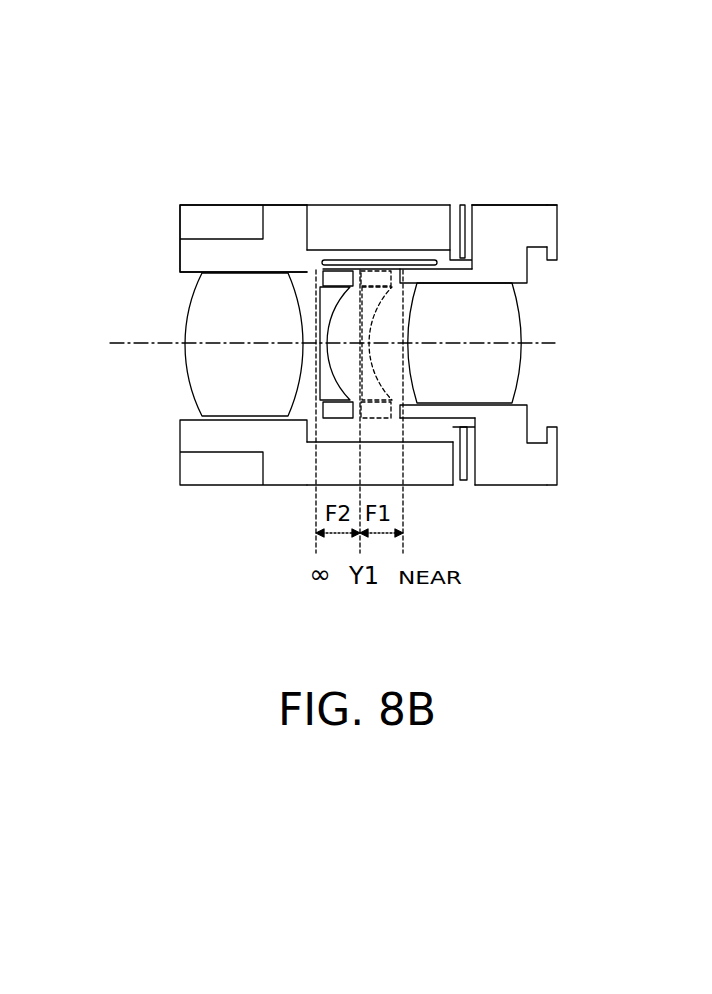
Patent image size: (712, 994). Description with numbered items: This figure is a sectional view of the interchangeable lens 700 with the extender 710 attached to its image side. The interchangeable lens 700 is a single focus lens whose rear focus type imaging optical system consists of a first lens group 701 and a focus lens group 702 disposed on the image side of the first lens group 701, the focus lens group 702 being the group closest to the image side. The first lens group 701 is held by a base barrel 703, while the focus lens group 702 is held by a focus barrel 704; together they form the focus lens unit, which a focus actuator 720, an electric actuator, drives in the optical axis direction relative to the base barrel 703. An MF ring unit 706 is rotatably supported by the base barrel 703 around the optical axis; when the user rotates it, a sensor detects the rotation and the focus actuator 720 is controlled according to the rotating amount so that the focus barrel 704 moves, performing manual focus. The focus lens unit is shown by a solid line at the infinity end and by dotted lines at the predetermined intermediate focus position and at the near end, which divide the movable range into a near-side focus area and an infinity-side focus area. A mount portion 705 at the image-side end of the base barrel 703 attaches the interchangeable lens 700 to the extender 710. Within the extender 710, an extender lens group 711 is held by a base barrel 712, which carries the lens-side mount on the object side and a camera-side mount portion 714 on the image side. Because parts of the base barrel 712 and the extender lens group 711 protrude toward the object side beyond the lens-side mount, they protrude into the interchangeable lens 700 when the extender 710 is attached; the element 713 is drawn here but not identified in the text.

The interchangeable lens 700 is at (463, 70).
The extender 710 is at (565, 68).
The first lens group 701 is at (200, 318).
The focus lens group 702 is at (342, 300).
The base barrel 703 is at (353, 227).
The focus barrel 704 is at (342, 410).
The mount portion 705 is at (455, 230).
The MF ring unit 706 is at (227, 217).
The extender lens group 711 is at (477, 325).
The base barrel 712 is at (518, 230).
The engaging pin 713 is at (470, 228).
The camera-side mount portion 714 is at (557, 237).
The focus actuator 720 is at (403, 248).